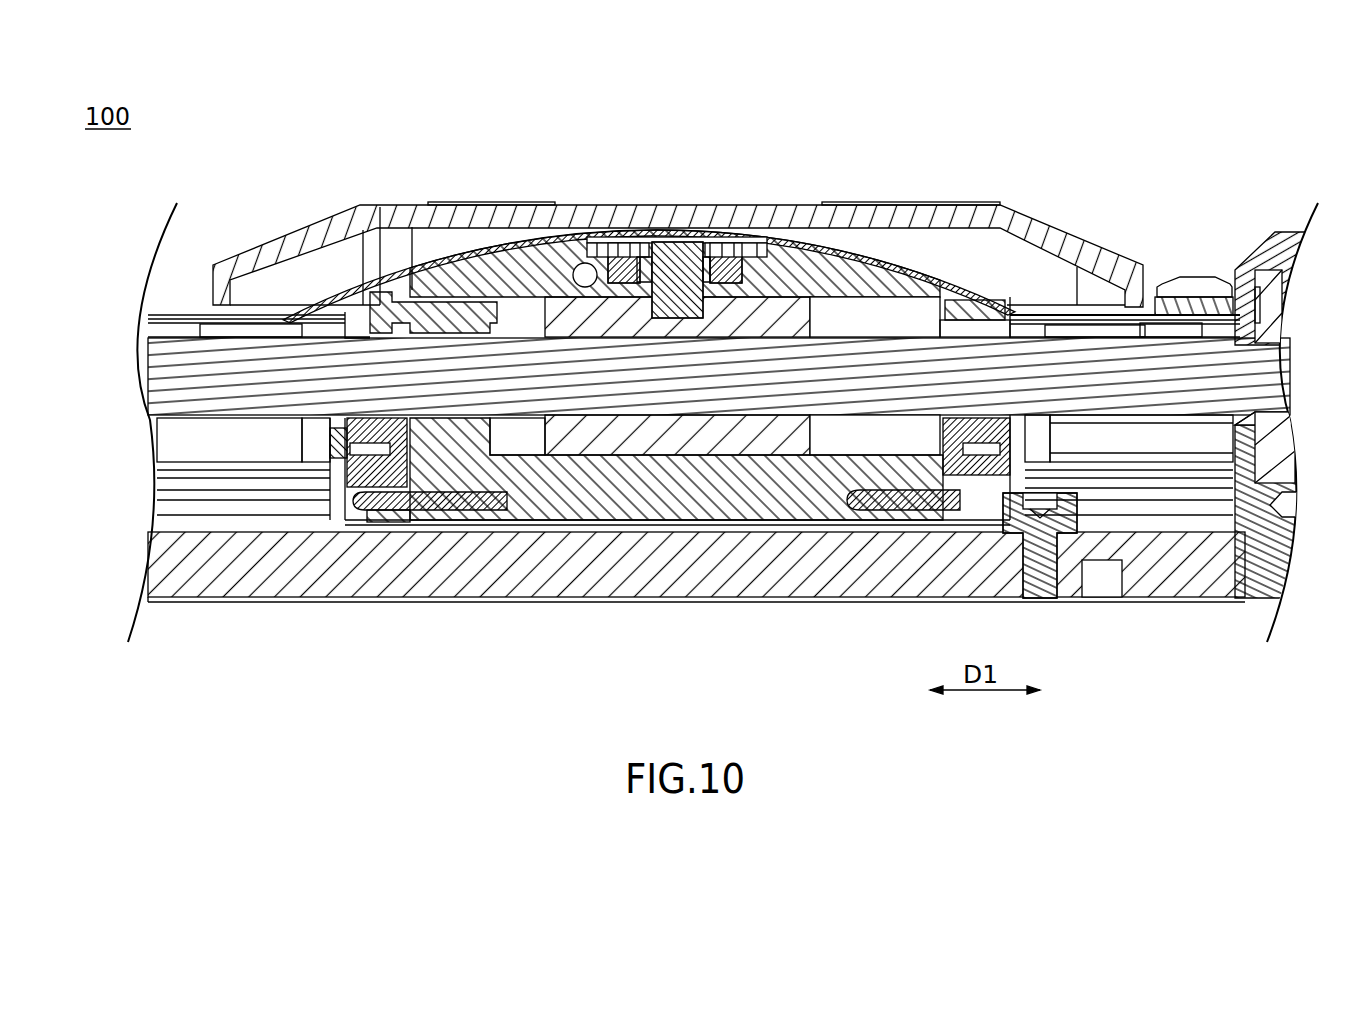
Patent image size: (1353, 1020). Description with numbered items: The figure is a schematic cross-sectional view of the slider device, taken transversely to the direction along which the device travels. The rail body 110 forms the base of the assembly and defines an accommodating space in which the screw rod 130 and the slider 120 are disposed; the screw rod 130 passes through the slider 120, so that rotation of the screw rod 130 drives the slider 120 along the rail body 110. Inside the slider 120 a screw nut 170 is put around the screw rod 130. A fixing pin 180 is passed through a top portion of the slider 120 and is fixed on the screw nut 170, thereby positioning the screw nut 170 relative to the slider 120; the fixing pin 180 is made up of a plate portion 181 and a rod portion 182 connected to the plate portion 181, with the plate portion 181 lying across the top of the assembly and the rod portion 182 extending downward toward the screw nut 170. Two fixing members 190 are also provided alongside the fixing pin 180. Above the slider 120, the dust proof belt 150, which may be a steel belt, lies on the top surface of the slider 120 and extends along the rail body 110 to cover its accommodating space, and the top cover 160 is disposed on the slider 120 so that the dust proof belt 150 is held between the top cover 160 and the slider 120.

The rail body 110 is at (683, 600).
The slider 120 is at (482, 283).
The screw rod 130 is at (1103, 357).
The dust proof belt 150 is at (868, 258).
The top cover 160 is at (977, 213).
The screw nut 170 is at (788, 300).
The fixing pin 180 is at (665, 126).
The plate portion 181 is at (598, 248).
The rod portion 182 is at (678, 283).
The fixing member 190 is at (757, 248).